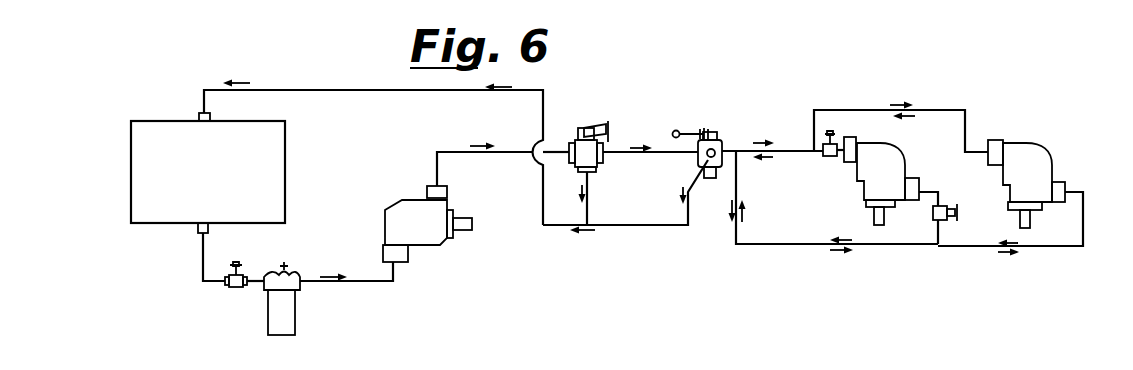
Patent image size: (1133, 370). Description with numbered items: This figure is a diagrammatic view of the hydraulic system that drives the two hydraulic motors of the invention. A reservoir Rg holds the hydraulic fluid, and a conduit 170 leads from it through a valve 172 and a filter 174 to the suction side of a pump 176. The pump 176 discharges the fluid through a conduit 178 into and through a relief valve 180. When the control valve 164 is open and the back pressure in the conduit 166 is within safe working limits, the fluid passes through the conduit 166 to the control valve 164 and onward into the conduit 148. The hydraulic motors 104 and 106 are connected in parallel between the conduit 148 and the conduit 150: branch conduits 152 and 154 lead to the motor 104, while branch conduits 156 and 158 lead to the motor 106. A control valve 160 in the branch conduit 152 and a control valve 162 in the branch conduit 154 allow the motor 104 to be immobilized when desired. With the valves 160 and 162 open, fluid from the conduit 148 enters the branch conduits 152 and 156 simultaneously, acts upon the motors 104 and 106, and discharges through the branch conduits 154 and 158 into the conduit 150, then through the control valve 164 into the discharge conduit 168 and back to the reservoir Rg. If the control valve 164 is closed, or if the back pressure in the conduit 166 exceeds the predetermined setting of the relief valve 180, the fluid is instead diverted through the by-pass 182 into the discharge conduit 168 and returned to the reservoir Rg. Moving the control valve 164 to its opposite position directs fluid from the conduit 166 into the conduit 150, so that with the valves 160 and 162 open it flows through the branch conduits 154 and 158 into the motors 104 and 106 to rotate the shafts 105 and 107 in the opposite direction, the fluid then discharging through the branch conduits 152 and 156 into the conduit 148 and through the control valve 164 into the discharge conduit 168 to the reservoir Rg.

The reservoir Rg is at (285, 198).
The conduit 170 is at (202, 254).
The valve 172 is at (235, 289).
The filter 174 is at (290, 308).
The pump 176 is at (395, 213).
The conduit 178 is at (437, 166).
The relief valve 180 is at (580, 133).
The by-pass 182 is at (592, 193).
The conduit 166 is at (658, 151).
The control valve 164 is at (718, 138).
The discharge conduit 168 is at (656, 226).
The conduit 148 is at (792, 149).
The branch conduit 152 is at (820, 156).
The control valve 160 is at (840, 148).
The hydraulic motor 104 is at (862, 190).
The shaft 105 is at (877, 222).
The branch conduit 154 is at (953, 172).
The control valve 162 is at (941, 218).
The conduit 150 is at (928, 246).
The branch conduit 156 is at (935, 110).
The hydraulic motor 106 is at (1043, 165).
The shaft 107 is at (1018, 220).
The branch conduit 158 is at (988, 248).